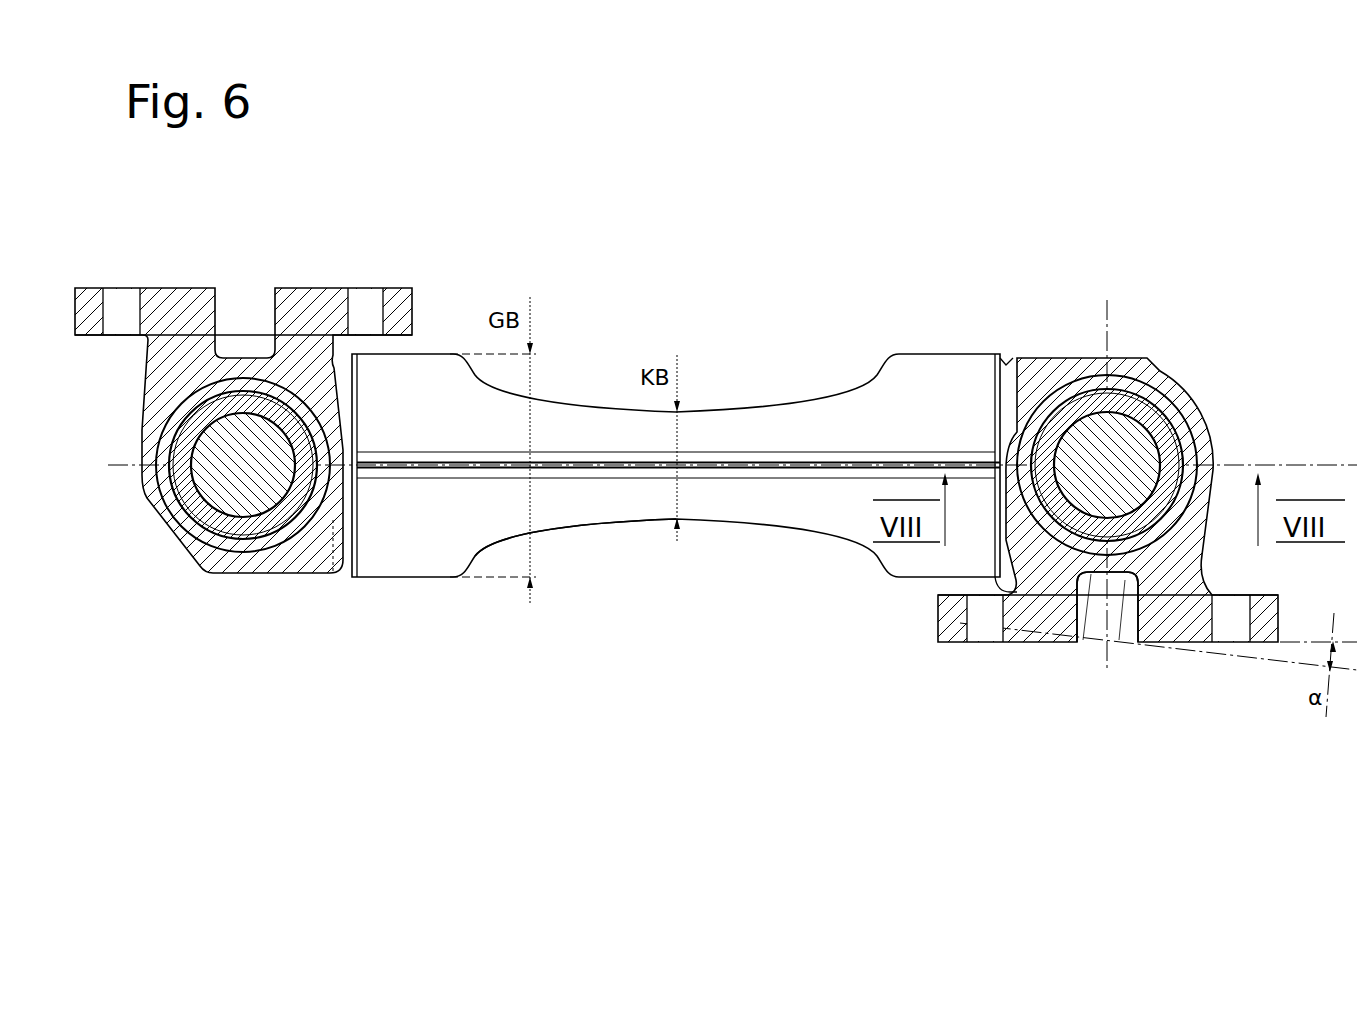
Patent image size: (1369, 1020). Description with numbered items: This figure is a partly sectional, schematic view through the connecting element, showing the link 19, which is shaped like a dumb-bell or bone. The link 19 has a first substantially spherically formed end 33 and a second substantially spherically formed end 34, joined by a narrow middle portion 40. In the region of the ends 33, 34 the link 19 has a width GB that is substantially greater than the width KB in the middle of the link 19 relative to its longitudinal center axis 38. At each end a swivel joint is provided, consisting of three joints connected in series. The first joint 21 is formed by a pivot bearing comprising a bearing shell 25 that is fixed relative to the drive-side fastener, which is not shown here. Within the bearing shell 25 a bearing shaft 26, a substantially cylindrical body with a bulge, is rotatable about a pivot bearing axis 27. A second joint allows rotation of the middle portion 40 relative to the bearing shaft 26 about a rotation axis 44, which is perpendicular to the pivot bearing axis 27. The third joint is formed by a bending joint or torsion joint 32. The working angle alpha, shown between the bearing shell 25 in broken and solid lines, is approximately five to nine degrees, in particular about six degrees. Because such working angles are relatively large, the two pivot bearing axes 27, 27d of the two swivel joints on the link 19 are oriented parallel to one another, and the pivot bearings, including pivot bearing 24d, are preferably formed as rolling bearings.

The link 19 is at (715, 435).
The first joint 21 is at (1108, 529).
The pivot bearing 24d is at (243, 507).
The bearing shell 25 is at (1167, 552).
The bearing shaft 26 is at (1188, 440).
The pivot bearing axis 27 is at (1053, 370).
The pivot bearing axis 27d is at (282, 540).
The bending joint or torsion joint 32 is at (655, 537).
The first end 33 is at (1003, 684).
The second end 34 is at (240, 596).
The longitudinal center axis 38 is at (122, 462).
The middle portion 40 is at (676, 487).
The rotation axis 44 is at (1105, 653).